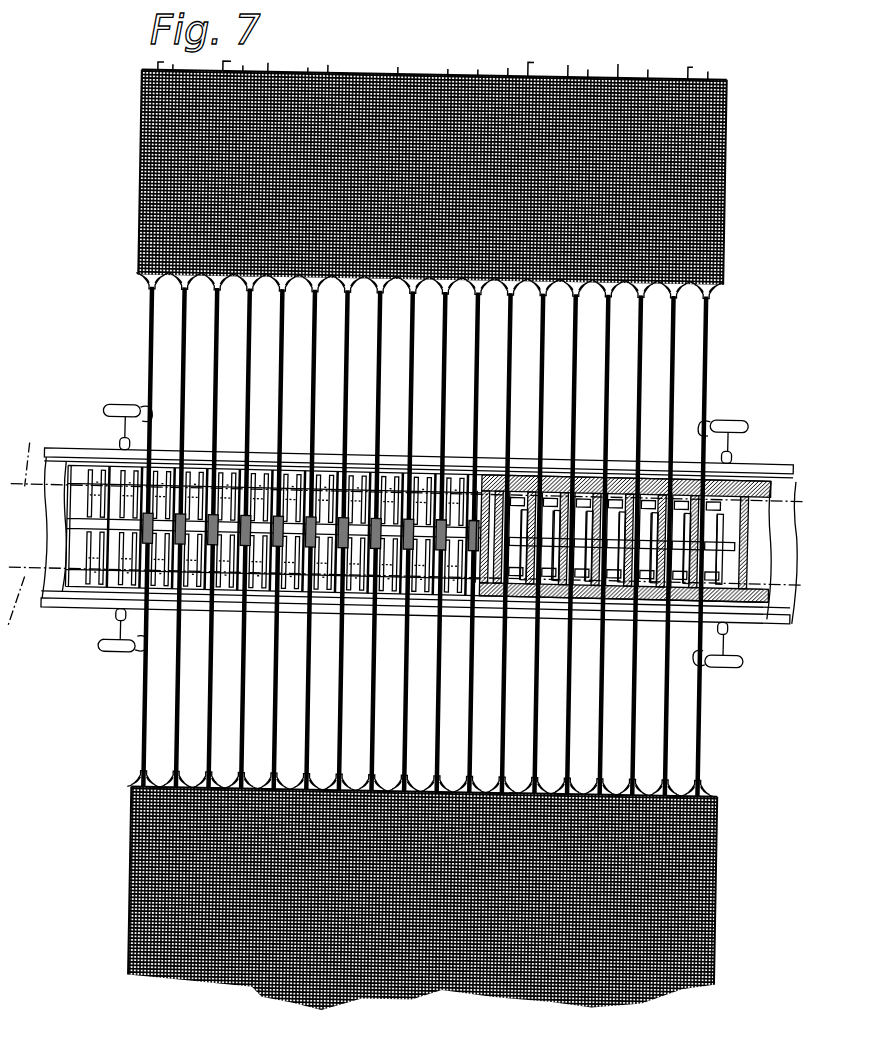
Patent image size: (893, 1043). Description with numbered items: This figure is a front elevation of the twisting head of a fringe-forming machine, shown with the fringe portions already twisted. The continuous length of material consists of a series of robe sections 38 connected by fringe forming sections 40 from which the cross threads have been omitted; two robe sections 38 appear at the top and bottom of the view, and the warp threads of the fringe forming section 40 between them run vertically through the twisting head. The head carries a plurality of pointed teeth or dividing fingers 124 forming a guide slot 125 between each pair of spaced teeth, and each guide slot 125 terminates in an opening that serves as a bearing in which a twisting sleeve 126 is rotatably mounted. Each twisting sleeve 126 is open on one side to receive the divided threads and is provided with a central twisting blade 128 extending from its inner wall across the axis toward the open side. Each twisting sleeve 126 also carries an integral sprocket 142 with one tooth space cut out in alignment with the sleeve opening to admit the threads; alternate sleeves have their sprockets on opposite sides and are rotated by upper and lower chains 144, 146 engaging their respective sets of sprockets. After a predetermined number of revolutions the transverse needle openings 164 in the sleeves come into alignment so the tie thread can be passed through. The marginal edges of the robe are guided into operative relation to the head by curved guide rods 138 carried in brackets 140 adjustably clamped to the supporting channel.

The robe sections 38 is at (134, 160).
The fringe forming sections 40 is at (134, 339).
The dividing fingers 124 is at (298, 480).
The guide slot 125 is at (359, 468).
The twisting sleeve 126 is at (586, 592).
The twisting blade 128 is at (596, 500).
The curved guide rods 138 is at (117, 413).
The brackets 140 is at (118, 452).
The sprocket 142 is at (548, 498).
The upper chain 144 is at (44, 454).
The lower chain 146 is at (25, 612).
The transverse needle openings 164 is at (768, 530).